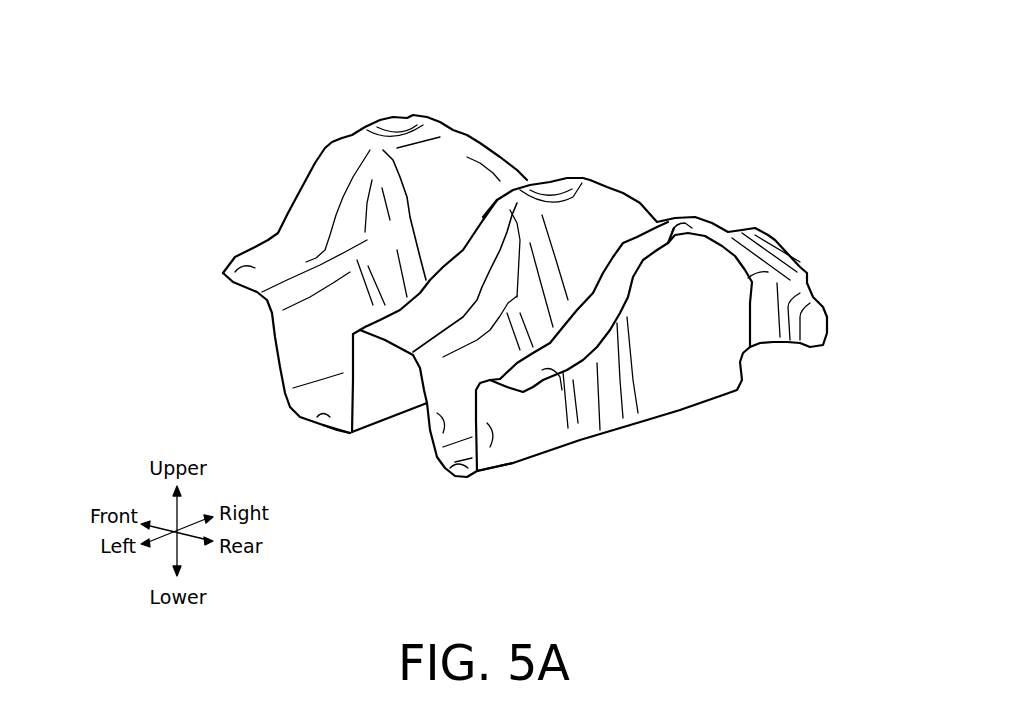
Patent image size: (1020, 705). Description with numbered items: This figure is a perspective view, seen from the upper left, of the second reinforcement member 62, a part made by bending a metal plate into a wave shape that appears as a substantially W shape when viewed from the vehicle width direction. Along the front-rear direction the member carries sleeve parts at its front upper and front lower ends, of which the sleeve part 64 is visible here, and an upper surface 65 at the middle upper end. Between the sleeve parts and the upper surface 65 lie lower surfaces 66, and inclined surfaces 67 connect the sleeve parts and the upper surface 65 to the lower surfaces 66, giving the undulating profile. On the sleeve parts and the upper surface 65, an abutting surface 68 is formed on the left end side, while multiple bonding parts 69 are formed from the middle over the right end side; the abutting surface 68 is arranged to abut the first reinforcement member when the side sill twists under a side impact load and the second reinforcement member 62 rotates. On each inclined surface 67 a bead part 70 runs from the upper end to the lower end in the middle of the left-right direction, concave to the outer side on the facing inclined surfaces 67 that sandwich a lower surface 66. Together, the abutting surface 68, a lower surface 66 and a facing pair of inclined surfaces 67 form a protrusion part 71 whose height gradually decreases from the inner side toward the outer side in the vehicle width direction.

The second reinforcement member 62 is at (300, 119).
The sleeve part 64 is at (807, 345).
The upper surface 65 is at (497, 207).
The lower surface 66 is at (323, 415).
The inclined surface 67 is at (347, 392).
The abutting surface 68 is at (357, 312).
The bonding part 69 is at (505, 203).
The bead part 70 is at (393, 247).
The protrusion part 71 is at (345, 432).